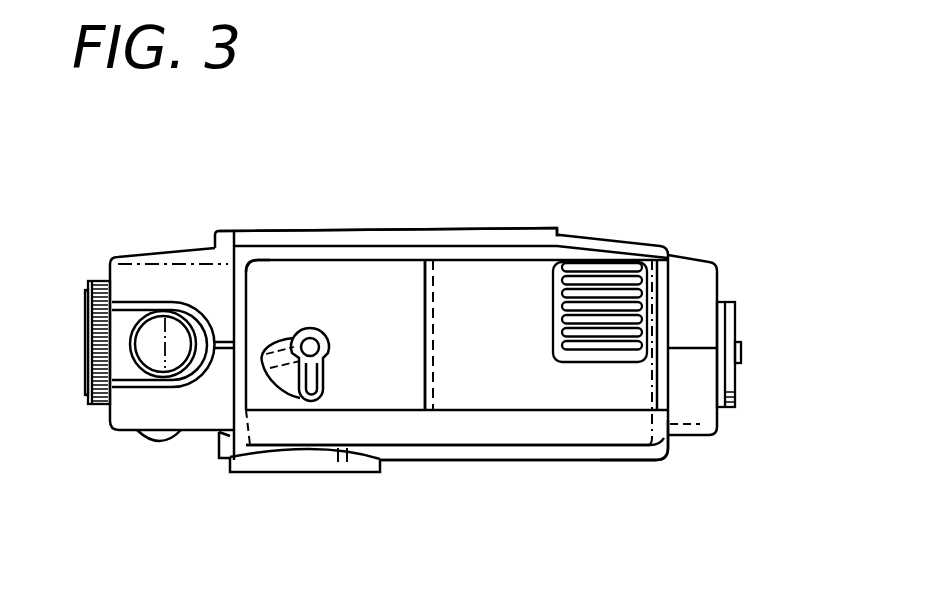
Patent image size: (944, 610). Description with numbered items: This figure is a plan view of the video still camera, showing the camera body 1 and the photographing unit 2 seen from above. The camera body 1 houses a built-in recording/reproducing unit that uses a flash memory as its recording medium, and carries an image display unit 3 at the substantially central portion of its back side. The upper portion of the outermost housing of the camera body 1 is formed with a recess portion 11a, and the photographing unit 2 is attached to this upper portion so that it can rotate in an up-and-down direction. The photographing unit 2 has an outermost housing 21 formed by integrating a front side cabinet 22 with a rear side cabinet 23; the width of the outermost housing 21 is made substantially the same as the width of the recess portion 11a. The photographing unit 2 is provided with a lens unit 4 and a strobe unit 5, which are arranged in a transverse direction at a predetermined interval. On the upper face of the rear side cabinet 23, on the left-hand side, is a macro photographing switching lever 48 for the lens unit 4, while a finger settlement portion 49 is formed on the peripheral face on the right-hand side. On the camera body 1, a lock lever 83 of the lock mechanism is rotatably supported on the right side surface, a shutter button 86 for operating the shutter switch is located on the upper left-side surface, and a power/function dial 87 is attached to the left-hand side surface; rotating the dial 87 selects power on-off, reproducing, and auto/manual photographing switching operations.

The camera body 1 is at (168, 250).
The photographing unit 2 is at (525, 465).
The image display unit 3 is at (406, 229).
The lens unit 4 is at (319, 463).
The strobe unit 5 is at (597, 456).
The recess portion 11a is at (263, 272).
The outermost housing 21 is at (541, 262).
The front side cabinet 22 is at (460, 436).
The rear side cabinet 23 is at (486, 262).
The macro photographing switching lever 48 is at (316, 376).
The finger settlement portion 49 is at (612, 300).
The lock lever 83 is at (736, 322).
The shutter button 86 is at (163, 368).
The power/function dial 87 is at (88, 332).